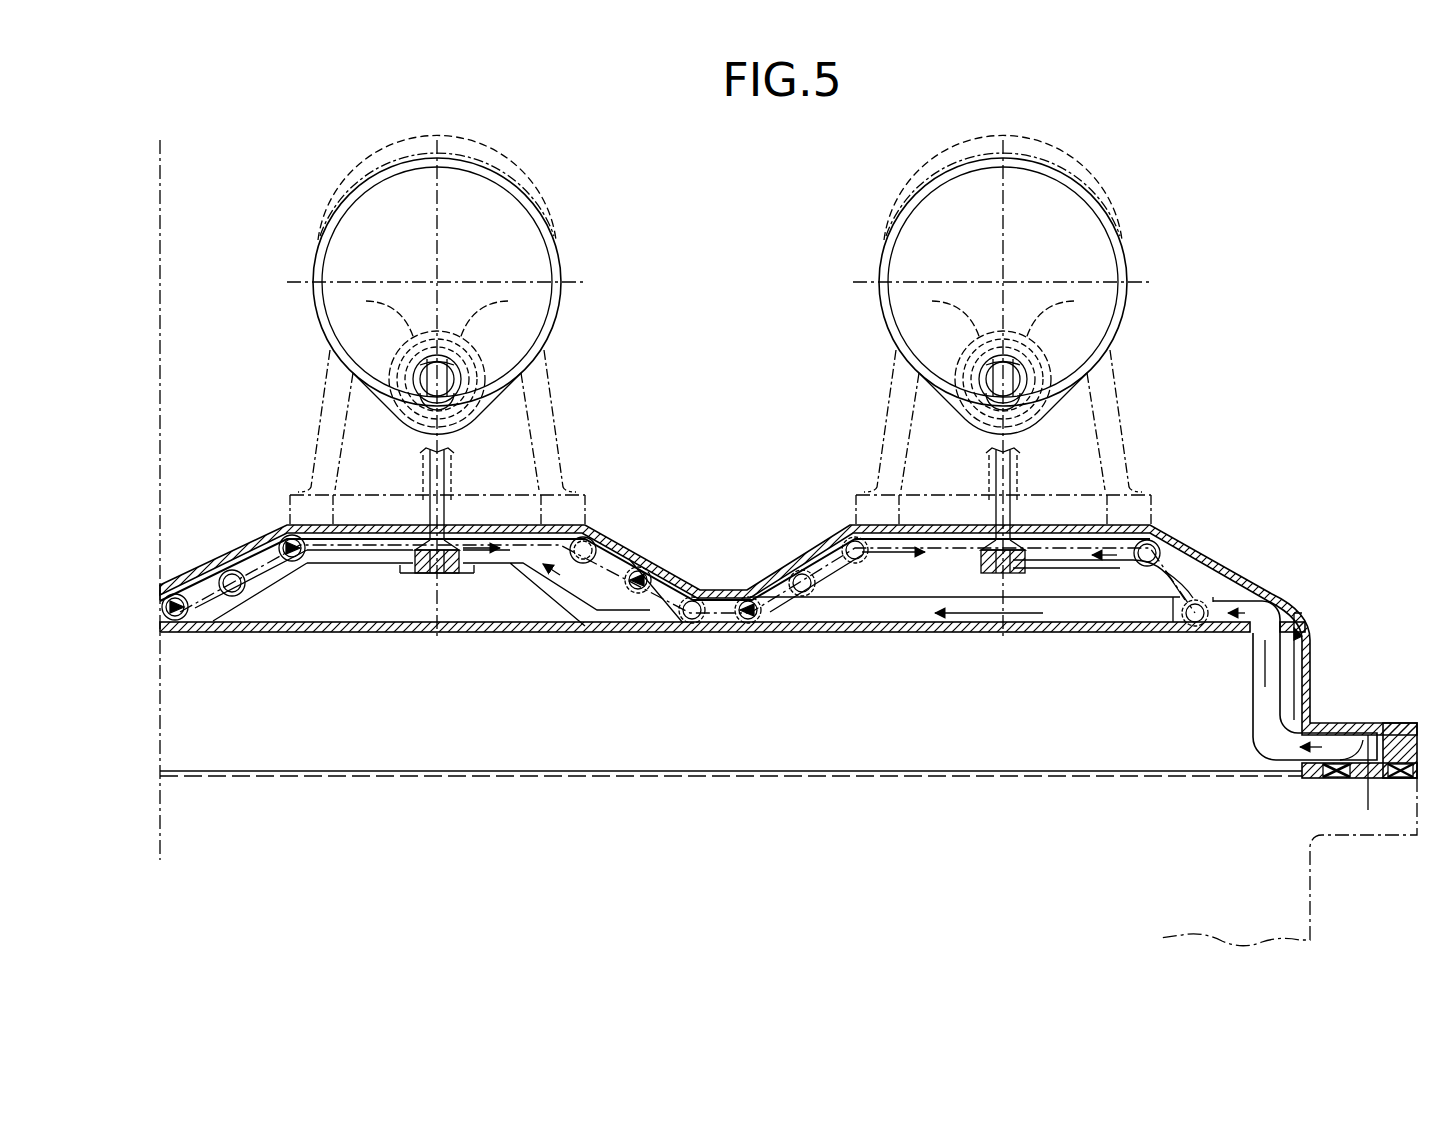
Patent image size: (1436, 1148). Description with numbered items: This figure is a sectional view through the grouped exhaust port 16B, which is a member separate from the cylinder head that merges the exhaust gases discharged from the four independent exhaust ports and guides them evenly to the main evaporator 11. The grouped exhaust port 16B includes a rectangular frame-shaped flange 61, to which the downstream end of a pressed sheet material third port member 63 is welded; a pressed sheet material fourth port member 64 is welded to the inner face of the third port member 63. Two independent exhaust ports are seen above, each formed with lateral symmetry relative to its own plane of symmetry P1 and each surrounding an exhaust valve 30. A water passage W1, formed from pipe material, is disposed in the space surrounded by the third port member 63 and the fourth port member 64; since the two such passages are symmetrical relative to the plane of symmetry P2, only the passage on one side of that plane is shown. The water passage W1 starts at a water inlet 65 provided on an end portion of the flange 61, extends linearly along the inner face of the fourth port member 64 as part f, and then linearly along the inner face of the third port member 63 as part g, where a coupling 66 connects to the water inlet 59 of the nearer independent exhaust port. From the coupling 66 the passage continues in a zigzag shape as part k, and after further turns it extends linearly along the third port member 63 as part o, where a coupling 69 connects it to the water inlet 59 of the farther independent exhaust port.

The exhaust valve 30 is at (517, 211).
The grouped exhaust port 16B is at (1240, 571).
The water inlet 59 is at (424, 521).
The third port member 63 is at (793, 563).
The fourth port member 64 is at (966, 637).
The water inlet 65 is at (1360, 780).
The coupling 66 is at (430, 574).
The coupling 69 is at (957, 540).
The flange 61 is at (1384, 723).
The main evaporator 11 is at (1310, 886).
The plane of symmetry P1 is at (437, 253).
The plane of symmetry P2 is at (160, 197).
The water passage W1 is at (488, 580).
The part g is at (492, 523).
The part k is at (247, 587).
The part o is at (1073, 567).
The part f is at (872, 620).